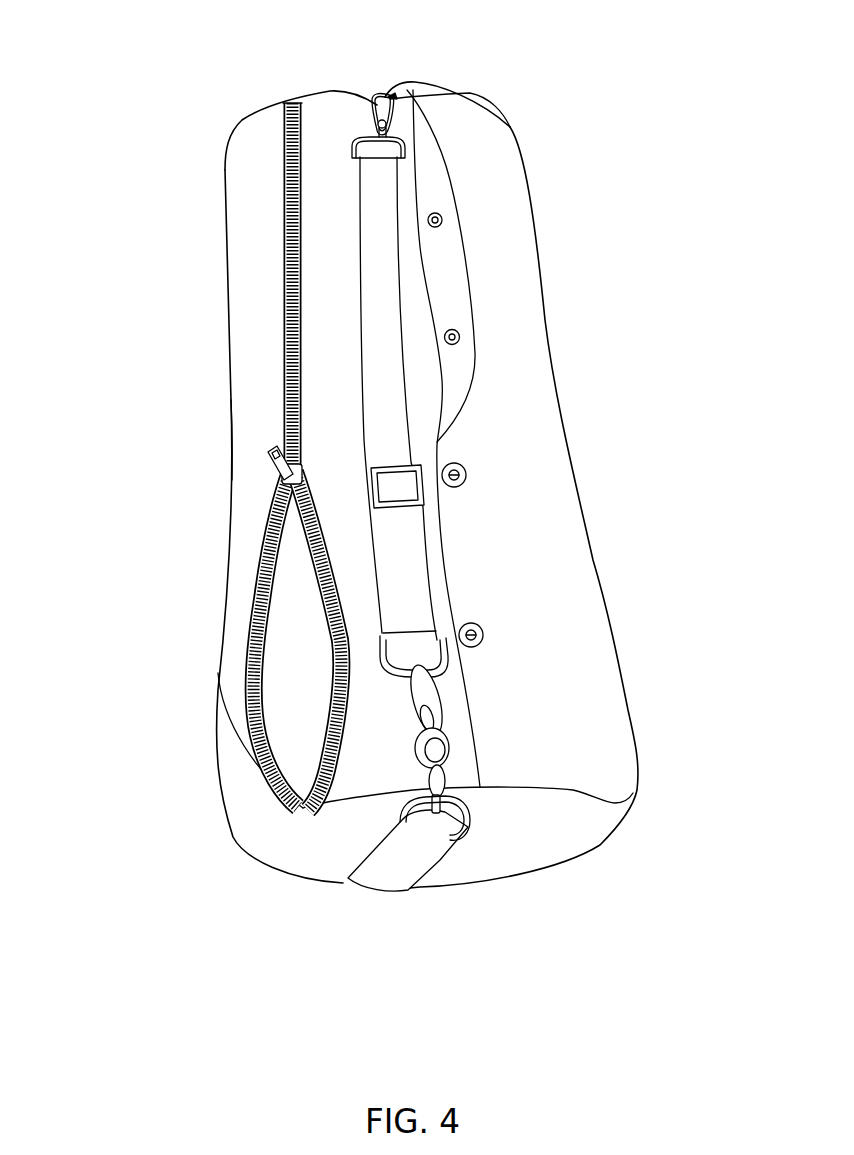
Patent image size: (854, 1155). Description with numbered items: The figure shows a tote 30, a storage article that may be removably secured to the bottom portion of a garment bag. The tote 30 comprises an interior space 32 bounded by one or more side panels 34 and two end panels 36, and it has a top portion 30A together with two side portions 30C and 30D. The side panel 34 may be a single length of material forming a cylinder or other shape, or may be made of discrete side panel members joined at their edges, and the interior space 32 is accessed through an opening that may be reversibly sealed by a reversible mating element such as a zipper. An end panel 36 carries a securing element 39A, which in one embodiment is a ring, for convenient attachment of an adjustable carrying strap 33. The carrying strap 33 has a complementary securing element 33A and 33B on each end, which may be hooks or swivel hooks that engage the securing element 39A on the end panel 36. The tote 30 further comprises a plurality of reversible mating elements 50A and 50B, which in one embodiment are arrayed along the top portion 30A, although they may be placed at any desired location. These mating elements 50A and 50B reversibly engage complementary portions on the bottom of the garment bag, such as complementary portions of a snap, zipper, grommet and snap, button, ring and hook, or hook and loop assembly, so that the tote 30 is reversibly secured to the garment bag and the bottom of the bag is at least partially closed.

The tote 30 is at (175, 140).
The top portion 30A is at (340, 107).
The side portion 30C is at (252, 308).
The side portion 30D is at (507, 223).
The interior space 32 is at (295, 689).
The adjustable carrying strap 33 is at (380, 193).
The complementary securing element 33A is at (428, 693).
The complementary securing element 33B is at (394, 104).
The side panel 34 is at (257, 387).
The end panel 36 is at (580, 838).
The securing element 39A is at (462, 823).
The reversible mating element 50A is at (467, 478).
The reversible mating element 50B is at (442, 223).